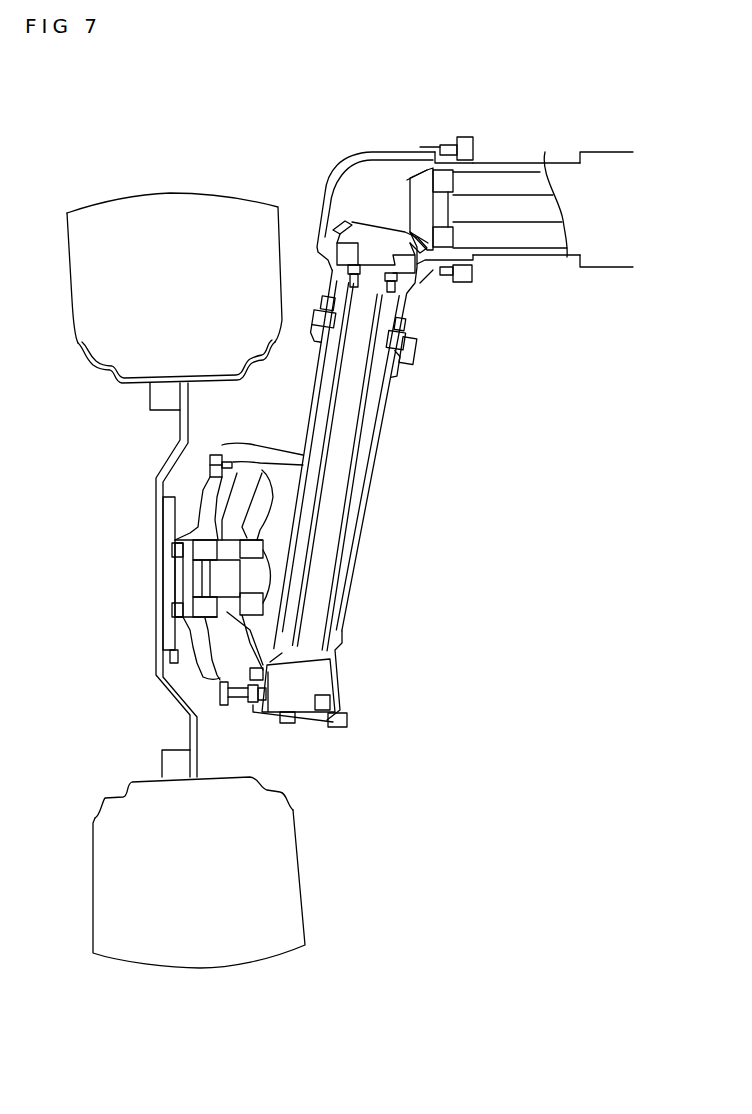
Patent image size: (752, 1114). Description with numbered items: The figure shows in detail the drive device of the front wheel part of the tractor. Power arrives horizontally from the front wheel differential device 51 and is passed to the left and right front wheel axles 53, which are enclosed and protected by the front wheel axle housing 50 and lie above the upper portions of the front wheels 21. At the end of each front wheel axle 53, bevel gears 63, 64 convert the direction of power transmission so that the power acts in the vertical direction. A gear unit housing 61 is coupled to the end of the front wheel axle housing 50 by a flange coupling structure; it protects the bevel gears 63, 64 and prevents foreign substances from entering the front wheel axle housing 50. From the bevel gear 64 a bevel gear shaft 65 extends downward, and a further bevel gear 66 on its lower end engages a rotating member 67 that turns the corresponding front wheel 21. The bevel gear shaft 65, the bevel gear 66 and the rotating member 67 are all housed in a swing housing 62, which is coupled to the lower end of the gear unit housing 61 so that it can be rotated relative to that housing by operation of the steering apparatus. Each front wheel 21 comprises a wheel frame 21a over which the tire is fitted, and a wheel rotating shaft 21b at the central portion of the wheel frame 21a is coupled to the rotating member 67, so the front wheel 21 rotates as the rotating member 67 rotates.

The front wheel 21 is at (177, 203).
The wheel frame 21a is at (163, 463).
The wheel rotating shaft 21b is at (187, 583).
The front wheel axle housing 50 is at (553, 162).
The front wheel differential device 51 is at (605, 150).
The front wheel axle 53 is at (510, 212).
The gear unit housing 61 is at (367, 157).
The swing housing 62 is at (348, 577).
The bevel gear 63 is at (423, 180).
The bevel gear 64 is at (380, 227).
The bevel gear shaft 65 is at (347, 422).
The bevel gear 66 is at (307, 683).
The rotating member 67 is at (237, 650).